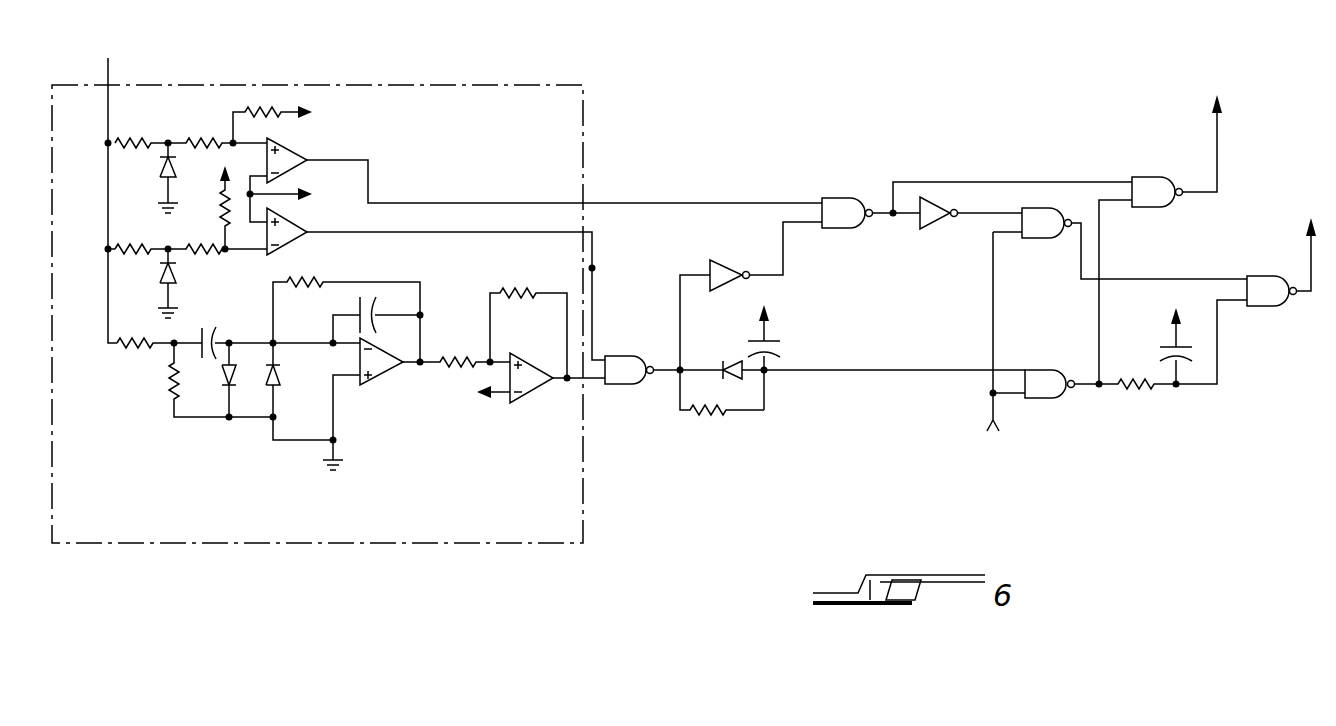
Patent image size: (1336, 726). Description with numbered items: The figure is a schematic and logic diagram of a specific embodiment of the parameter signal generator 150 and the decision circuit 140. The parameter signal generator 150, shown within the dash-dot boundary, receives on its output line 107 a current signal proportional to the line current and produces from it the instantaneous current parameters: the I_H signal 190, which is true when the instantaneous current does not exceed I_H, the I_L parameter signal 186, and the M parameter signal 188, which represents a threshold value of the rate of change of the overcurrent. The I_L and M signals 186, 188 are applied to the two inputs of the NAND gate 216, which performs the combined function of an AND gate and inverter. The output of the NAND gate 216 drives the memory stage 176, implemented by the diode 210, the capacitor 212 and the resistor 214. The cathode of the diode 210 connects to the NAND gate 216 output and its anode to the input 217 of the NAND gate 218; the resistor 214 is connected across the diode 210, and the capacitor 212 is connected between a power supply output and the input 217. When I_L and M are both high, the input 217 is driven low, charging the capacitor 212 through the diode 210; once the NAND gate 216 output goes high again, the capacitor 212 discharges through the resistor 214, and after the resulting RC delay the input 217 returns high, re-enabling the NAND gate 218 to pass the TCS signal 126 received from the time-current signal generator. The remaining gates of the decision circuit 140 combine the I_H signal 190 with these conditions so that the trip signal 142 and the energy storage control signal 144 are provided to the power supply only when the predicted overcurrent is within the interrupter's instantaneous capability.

The output 107 is at (108, 78).
The parameter signal generator 150 is at (440, 543).
The I_H signal 190 is at (698, 203).
The I_L parameter signal 186 is at (594, 269).
The M parameter signal 188 is at (567, 386).
The 2-input NAND gate 216 is at (640, 386).
The diode 210 is at (735, 360).
The resistor 214 is at (713, 418).
The memory stage 176 is at (766, 414).
The capacitor 212 is at (779, 340).
The input 217 is at (962, 370).
The decision circuit 140 is at (921, 147).
The 2-input NAND gate 218 is at (1063, 372).
The TCS signal 126 is at (996, 413).
The energy storage control signal 144 is at (1217, 165).
The trip signal 142 is at (1310, 260).